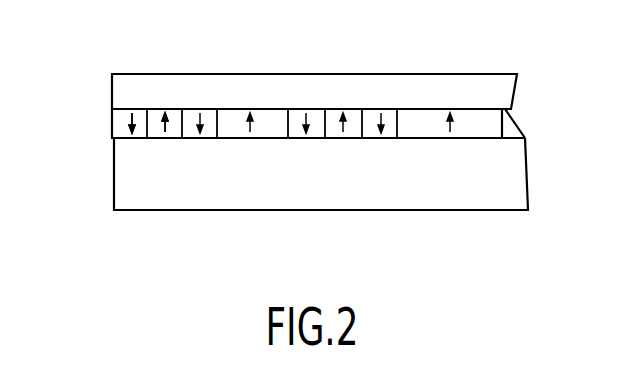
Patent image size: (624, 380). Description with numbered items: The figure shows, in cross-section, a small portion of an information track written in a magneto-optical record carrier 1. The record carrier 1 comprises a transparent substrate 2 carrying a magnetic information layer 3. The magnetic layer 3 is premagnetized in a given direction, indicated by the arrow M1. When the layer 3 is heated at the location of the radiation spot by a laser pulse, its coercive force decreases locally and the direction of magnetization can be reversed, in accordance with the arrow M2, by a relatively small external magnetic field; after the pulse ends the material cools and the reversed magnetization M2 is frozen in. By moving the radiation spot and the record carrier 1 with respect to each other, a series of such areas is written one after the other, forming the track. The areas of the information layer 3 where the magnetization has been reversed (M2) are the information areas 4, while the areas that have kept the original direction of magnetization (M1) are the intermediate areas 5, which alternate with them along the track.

The magneto-optical record carrier 1 is at (487, 53).
The transparent substrate 2 is at (498, 197).
The magnetic information layer 3 is at (497, 130).
The information areas 4 is at (190, 117).
The intermediate areas 5 is at (172, 115).
The original direction of magnetization M1 is at (165, 128).
The reversed direction of magnetization M2 is at (133, 122).